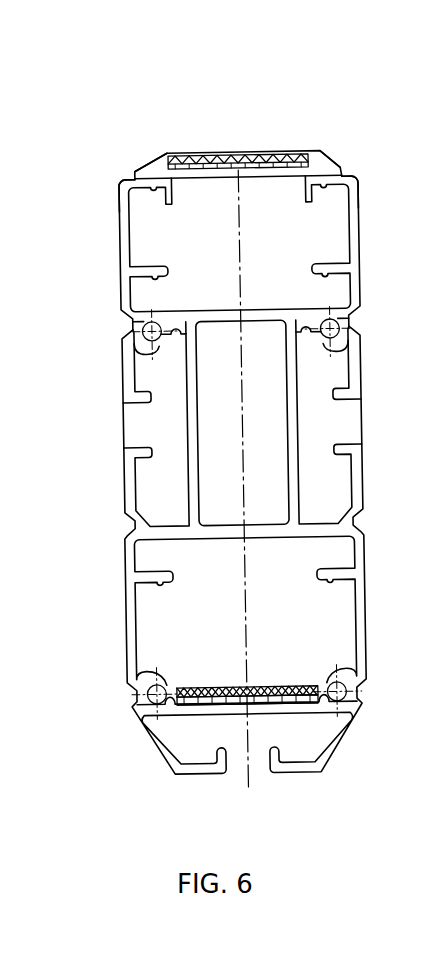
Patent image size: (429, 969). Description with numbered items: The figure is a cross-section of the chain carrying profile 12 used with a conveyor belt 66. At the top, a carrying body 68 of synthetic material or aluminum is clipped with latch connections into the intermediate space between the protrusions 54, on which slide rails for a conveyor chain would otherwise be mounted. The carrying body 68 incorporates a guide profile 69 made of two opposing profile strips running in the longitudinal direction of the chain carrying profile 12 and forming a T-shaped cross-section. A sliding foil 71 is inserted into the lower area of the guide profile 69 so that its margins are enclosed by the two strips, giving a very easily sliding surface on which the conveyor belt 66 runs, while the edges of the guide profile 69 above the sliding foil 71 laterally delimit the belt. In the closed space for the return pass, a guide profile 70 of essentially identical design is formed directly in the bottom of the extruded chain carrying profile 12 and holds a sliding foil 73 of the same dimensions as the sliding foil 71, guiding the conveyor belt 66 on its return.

The chain carrying profile 12 is at (122, 573).
The protrusions 54 is at (130, 176).
The conveyor belt 66 is at (217, 150).
The carrying body 68 is at (327, 160).
The guide profile 69 is at (170, 157).
The guide profile 70 is at (128, 678).
The sliding foil 71 is at (268, 153).
The sliding foil 73 is at (290, 703).